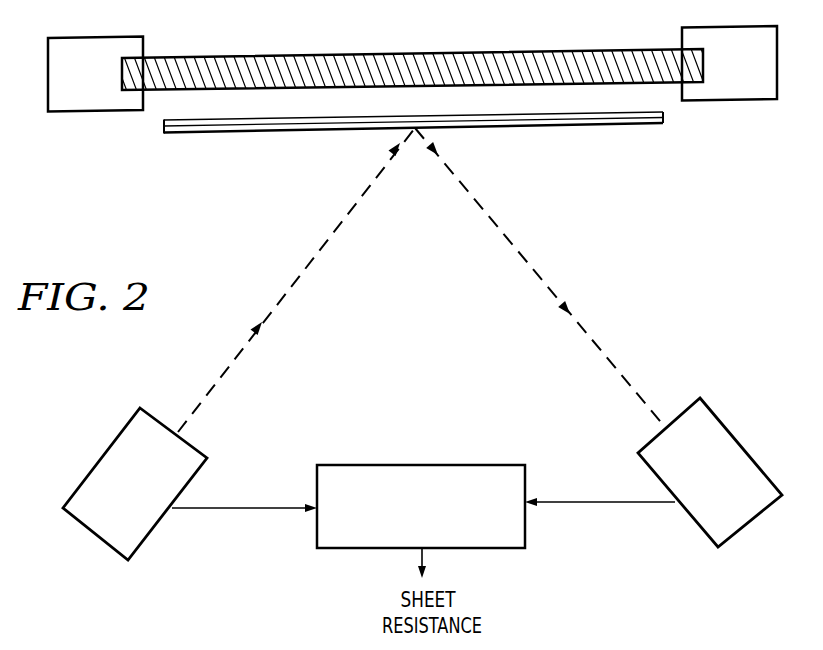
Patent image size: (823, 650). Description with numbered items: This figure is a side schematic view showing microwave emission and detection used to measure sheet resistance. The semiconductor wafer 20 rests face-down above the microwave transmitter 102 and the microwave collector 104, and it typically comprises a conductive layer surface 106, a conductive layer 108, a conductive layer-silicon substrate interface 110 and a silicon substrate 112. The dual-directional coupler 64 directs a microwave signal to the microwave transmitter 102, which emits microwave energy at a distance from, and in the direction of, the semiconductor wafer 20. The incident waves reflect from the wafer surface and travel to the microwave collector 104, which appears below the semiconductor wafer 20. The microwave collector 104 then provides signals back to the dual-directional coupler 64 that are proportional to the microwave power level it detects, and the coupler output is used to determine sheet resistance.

The semiconductor wafer 20 is at (406, 160).
The dual-directional coupler 64 is at (453, 465).
The microwave transmitter 102 is at (151, 498).
The microwave collector 104 is at (731, 486).
The conductive layer surface 106 is at (210, 134).
The conductive layer 108 is at (164, 133).
The conductive layer-silicon substrate interface 110 is at (163, 126).
The silicon substrate 112 is at (164, 120).